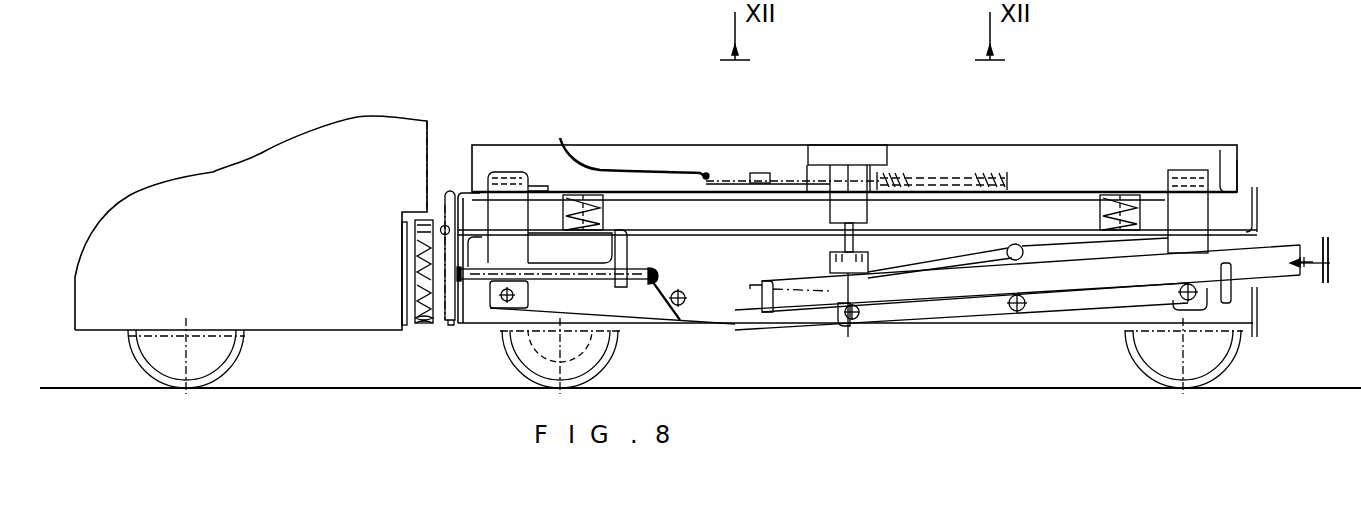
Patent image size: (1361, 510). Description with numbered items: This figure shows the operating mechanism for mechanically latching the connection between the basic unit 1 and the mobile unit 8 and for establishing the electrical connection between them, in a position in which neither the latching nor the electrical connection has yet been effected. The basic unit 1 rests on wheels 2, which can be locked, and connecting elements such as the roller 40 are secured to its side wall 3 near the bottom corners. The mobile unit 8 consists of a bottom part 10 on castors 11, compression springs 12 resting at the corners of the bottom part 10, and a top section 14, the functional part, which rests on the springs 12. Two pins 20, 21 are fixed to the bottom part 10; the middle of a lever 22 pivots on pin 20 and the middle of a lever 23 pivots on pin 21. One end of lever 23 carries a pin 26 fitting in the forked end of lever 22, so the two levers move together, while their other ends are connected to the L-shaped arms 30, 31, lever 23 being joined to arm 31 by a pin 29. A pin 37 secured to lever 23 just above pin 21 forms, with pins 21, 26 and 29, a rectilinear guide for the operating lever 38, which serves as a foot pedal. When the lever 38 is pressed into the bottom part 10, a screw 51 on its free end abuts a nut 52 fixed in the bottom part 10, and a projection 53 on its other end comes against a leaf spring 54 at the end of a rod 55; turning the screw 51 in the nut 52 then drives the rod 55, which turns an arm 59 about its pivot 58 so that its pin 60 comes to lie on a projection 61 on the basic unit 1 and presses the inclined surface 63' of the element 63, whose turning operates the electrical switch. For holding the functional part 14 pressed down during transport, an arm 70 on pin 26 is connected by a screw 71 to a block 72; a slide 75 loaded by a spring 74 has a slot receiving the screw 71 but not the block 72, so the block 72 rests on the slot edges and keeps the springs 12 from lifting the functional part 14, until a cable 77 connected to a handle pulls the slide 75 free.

The basic unit 1 is at (232, 178).
The wheels 2 is at (220, 362).
The side wall 3 is at (432, 132).
The mobile unit 8 is at (1300, 155).
The bottom part 10 is at (1258, 214).
The castors 11 is at (542, 365).
The compression springs 12 is at (602, 220).
The top section 14 is at (1240, 178).
The pin 20 is at (683, 306).
The pin 21 is at (1023, 312).
The lever 22 is at (778, 320).
The lever 23 is at (950, 312).
The pin 26 is at (862, 320).
The pin 29 is at (1180, 298).
The L-shaped arm 30 is at (500, 196).
The L-shaped arm 31 is at (1188, 196).
The pin 37 is at (1010, 246).
The operating lever 38 is at (1258, 288).
The roller 40 is at (404, 224).
The screw 51 is at (1306, 262).
The nut 52 is at (1250, 318).
The projection 53 is at (764, 296).
The leaf spring 54 is at (656, 300).
The rod 55 is at (600, 279).
The pivot 58 is at (443, 226).
The arm 59 is at (426, 292).
The pin 60 is at (444, 328).
The projection 61 is at (430, 326).
The element 63 is at (382, 260).
The inclined surface 63' is at (378, 307).
The arm 70 is at (830, 262).
The screw 71 is at (868, 226).
The block 72 is at (826, 213).
The spring 74 is at (950, 172).
The slide 75 is at (812, 165).
The cable 77 is at (598, 168).